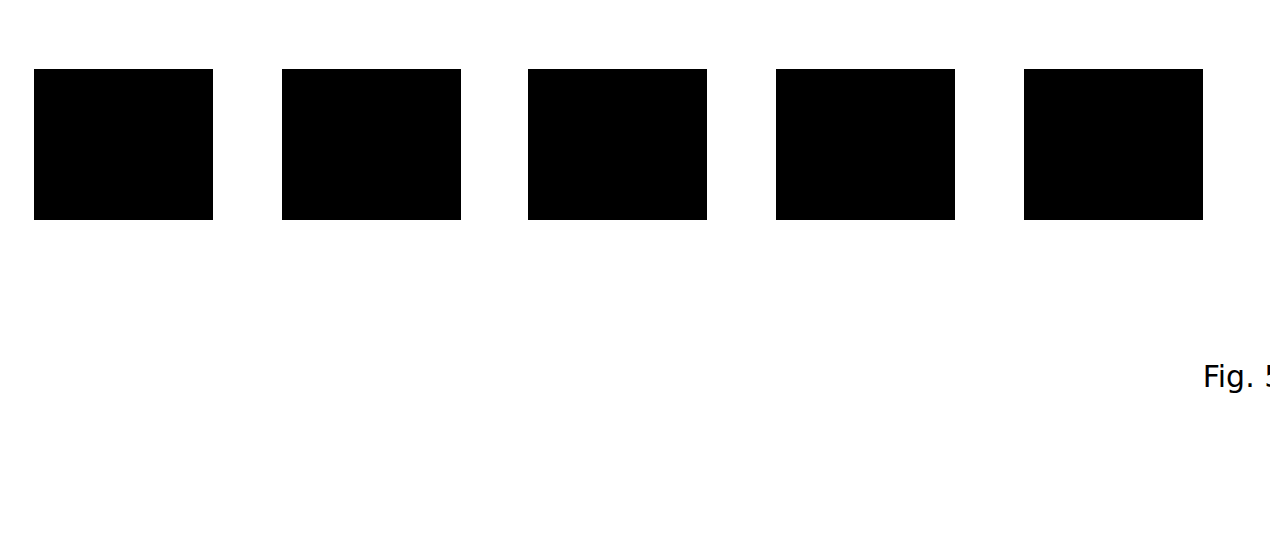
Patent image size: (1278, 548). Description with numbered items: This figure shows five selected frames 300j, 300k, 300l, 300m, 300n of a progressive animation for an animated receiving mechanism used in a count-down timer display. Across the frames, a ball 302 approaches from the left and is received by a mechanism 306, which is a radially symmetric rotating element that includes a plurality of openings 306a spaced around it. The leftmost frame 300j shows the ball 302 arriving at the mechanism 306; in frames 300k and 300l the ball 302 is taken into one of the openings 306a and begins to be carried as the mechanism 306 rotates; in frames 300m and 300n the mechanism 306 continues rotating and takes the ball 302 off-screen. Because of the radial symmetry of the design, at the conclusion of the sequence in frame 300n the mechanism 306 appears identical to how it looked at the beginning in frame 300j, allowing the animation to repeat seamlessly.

The frame 300j is at (123, 173).
The frame 300k is at (371, 173).
The frame 300l is at (617, 173).
The frame 300m is at (865, 173).
The frame 300n is at (1113, 173).
The mechanism 306 is at (204, 118).
The openings 306a is at (658, 60).
The ball 302 is at (395, 205).